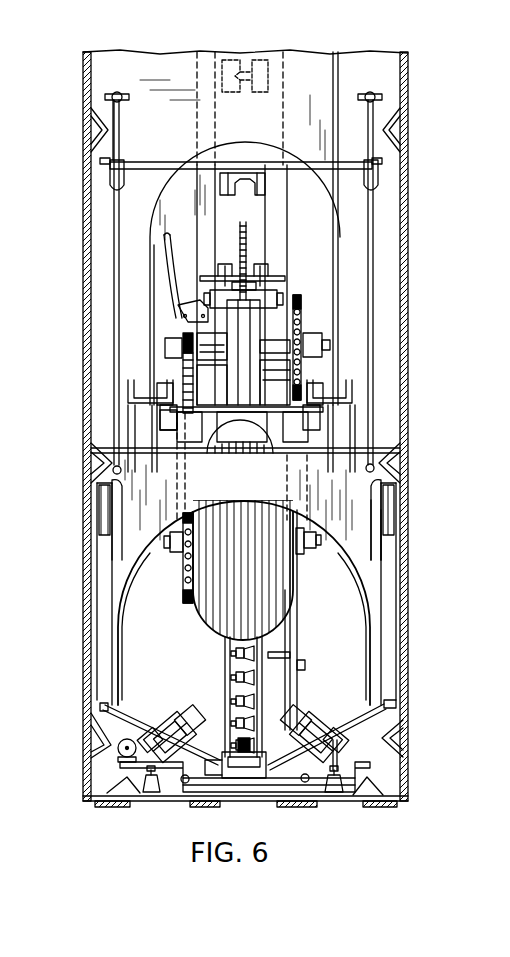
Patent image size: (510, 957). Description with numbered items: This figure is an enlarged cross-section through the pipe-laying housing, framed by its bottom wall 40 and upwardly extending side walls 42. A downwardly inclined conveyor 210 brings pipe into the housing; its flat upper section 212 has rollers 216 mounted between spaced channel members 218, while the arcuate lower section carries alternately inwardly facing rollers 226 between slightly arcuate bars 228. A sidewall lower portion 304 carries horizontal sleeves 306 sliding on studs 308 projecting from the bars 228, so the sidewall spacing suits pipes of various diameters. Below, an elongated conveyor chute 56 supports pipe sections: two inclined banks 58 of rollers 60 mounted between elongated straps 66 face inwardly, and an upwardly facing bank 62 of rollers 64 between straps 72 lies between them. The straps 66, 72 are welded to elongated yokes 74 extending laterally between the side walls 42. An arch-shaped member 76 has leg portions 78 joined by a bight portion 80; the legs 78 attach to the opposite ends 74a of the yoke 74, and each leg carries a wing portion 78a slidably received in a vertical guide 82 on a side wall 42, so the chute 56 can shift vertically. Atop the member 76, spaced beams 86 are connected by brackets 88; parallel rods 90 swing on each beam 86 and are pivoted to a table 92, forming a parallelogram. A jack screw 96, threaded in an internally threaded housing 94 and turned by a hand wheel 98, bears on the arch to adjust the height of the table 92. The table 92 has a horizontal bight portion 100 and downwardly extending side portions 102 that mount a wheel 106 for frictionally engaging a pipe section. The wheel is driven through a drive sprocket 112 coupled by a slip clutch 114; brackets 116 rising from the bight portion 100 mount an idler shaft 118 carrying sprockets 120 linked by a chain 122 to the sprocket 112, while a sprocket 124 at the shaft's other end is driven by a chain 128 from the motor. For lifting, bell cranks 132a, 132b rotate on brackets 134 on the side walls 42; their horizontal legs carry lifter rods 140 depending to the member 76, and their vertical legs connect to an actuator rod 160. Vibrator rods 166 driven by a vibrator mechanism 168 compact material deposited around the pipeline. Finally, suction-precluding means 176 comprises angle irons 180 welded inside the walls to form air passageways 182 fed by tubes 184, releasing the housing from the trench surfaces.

The bottom wall 40 is at (250, 801).
The side walls 42 is at (87, 318).
The conveyor chute 56 is at (206, 767).
The inclined banks 58 is at (340, 755).
The rollers 60 is at (183, 718).
The upwardly facing bank 62 is at (269, 782).
The rollers 64 is at (244, 764).
The straps 66 is at (155, 725).
The straps 72 is at (284, 770).
The yokes 74 is at (343, 714).
The yoke ends 74a is at (380, 710).
The arch-shaped member 76 is at (378, 498).
The leg portions 78 is at (118, 612).
The wing portion 78a is at (118, 546).
The bight portion 80 is at (256, 498).
The vertical guide 82 is at (100, 573).
The beams 86 is at (132, 390).
The brackets 88 is at (130, 420).
The rods 90 is at (163, 392).
The table 92 is at (264, 451).
The internally threaded housing 94 is at (210, 302).
The jack screw 96 is at (243, 253).
The hand wheel 98 is at (202, 278).
The bight portion 100 is at (245, 430).
The side portions 102 is at (170, 455).
The wheel 106 is at (204, 633).
The drive sprocket 112 is at (184, 584).
The slip clutch 114 is at (192, 603).
The brackets 116 is at (165, 346).
The idler shaft 118 is at (283, 351).
The sprockets 120 is at (212, 319).
The chain 122 is at (187, 458).
The sprocket 124 is at (301, 307).
The chain 128 is at (297, 294).
The bell crank 132a is at (119, 122).
The bell crank 132b is at (371, 92).
The brackets 134 is at (108, 175).
The lifter rod 140 is at (118, 222).
The actuator rod 160 is at (122, 98).
The vibrator rods 166 is at (183, 784).
The vibrator mechanism 168 is at (112, 764).
The suction precluding means 176 is at (88, 779).
The angle irons 180 is at (91, 112).
The passageway 182 is at (95, 131).
The tubes 184 is at (135, 698).
The conveyor 210 is at (267, 228).
The upper section 212 is at (318, 246).
The rollers 216 is at (258, 184).
The channel members 218 is at (276, 150).
The rollers 226 is at (236, 678).
The bars 228 is at (240, 645).
The lower portion 304 is at (297, 630).
The sleeves 306 is at (297, 656).
The studs 308 is at (306, 665).